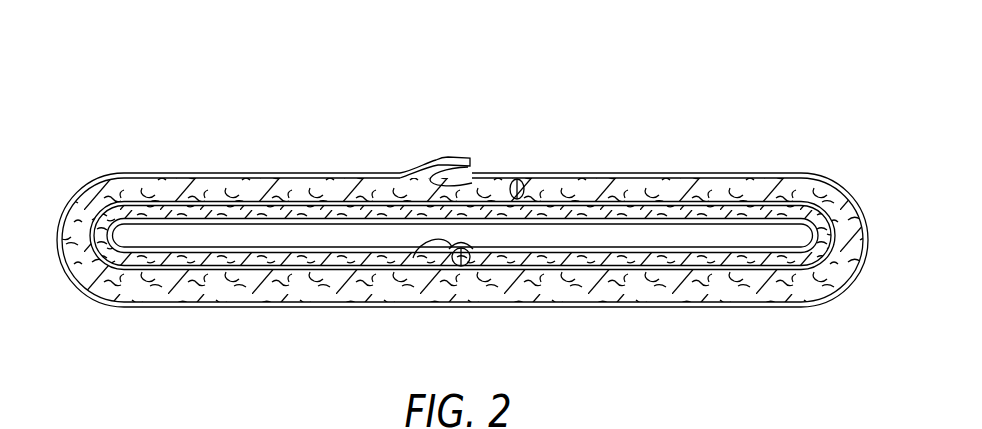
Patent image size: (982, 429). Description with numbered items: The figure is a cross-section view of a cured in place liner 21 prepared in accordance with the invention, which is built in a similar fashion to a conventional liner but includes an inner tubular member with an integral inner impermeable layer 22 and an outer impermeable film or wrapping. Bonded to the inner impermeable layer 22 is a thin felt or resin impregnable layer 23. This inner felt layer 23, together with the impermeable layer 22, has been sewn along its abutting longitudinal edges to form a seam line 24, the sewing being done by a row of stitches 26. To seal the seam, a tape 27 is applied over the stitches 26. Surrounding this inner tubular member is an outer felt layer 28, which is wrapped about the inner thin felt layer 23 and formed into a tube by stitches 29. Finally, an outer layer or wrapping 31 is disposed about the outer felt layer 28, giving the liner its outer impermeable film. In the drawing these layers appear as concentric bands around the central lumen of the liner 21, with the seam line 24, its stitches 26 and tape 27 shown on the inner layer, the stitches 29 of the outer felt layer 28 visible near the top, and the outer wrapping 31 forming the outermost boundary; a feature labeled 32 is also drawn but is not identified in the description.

The cured in place liner 21 is at (584, 88).
The integral inner impermeable layer 22 is at (827, 182).
The thin felt or resin impregnable layer 23 is at (274, 206).
The seam line 24 is at (447, 256).
The stitches 26 is at (470, 268).
The tape 27 is at (415, 256).
The outer felt layer 28 is at (733, 184).
The stitches 29 is at (524, 187).
The outer layer or wrapping 31 is at (88, 180).
The flap 32 is at (448, 157).